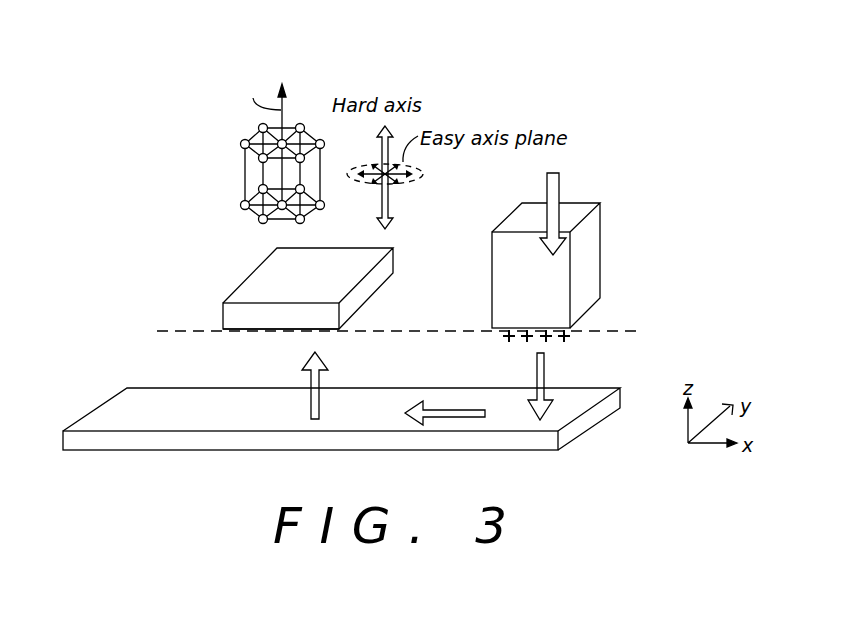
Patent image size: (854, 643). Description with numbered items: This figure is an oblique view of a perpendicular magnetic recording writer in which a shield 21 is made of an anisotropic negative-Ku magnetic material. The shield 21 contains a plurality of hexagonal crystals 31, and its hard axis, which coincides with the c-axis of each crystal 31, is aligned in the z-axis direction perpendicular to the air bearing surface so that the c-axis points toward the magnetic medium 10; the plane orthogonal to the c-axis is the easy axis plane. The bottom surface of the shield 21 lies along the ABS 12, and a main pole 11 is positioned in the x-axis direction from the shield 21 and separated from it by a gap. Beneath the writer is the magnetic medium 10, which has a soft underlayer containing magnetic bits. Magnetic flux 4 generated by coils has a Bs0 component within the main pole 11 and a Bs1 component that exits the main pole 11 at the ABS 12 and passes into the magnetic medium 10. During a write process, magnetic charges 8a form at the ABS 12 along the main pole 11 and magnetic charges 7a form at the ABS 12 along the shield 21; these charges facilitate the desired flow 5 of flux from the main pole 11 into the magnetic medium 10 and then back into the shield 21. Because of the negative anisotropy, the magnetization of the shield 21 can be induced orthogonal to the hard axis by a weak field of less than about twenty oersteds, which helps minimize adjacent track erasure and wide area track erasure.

The crystal 31 is at (195, 62).
The magnetic flux 4 is at (547, 180).
The main pole 11 is at (592, 258).
The ABS 12 is at (398, 332).
The magnetic charges 8a is at (571, 342).
The shield 21 is at (250, 275).
The magnetic charges 7a is at (262, 337).
The flow of flux 5 is at (530, 365).
The magnetic medium 10 is at (118, 412).